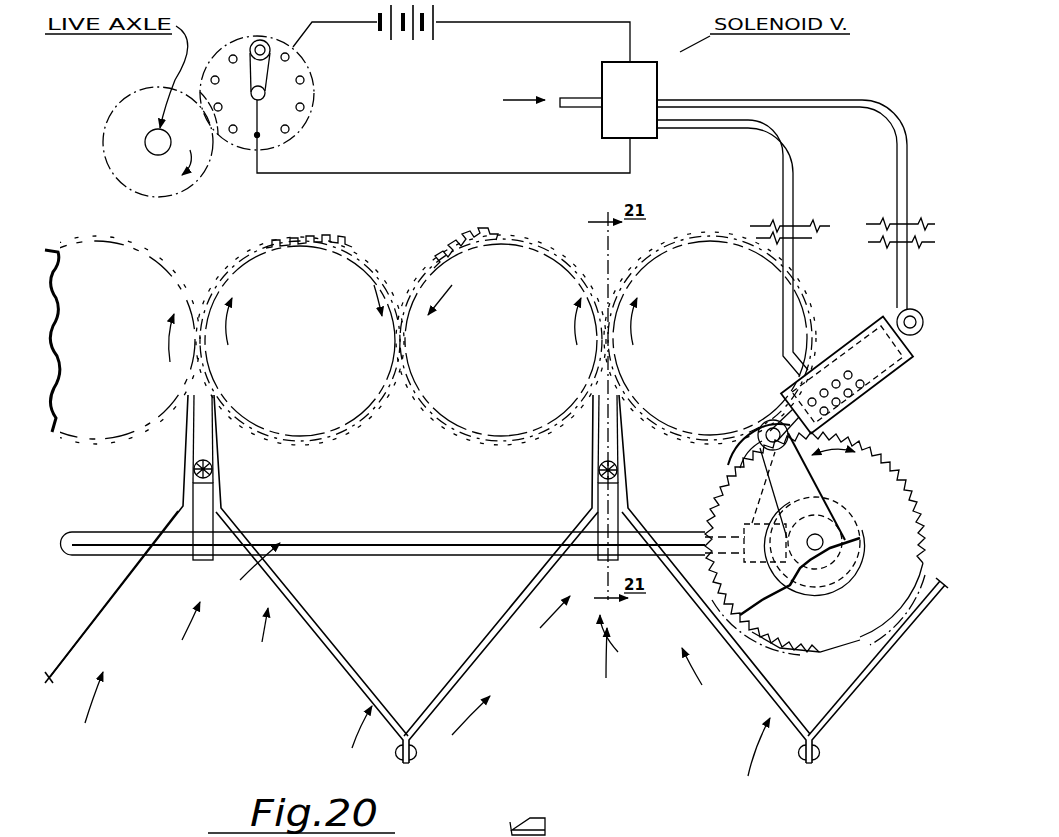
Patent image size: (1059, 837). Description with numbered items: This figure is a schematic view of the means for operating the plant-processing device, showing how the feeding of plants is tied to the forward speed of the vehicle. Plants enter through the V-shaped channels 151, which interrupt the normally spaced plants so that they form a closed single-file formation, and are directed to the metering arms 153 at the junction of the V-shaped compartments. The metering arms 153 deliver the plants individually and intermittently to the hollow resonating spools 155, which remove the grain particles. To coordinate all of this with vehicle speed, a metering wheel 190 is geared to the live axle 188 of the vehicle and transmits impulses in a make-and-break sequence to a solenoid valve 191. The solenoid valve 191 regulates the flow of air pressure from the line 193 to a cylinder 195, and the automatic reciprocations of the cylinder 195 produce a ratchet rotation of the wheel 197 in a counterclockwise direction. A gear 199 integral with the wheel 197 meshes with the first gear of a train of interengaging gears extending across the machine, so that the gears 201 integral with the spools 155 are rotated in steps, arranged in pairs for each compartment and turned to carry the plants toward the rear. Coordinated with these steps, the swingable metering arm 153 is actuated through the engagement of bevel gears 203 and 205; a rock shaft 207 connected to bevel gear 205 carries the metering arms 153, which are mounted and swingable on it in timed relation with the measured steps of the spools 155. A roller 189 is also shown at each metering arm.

The V-shaped channels 151 is at (104, 622).
The metering arms 153 is at (197, 501).
The hollow resonating spools 155 is at (246, 242).
The live axle 188 is at (146, 143).
The roller 189 is at (213, 469).
The metering wheel 190 is at (296, 104).
The solenoid valve 191 is at (660, 86).
The line 193 is at (573, 108).
The cylinder 195 is at (860, 320).
The wheel 197 is at (893, 476).
The gear 199 is at (818, 650).
The gears 201 is at (336, 236).
The bevel gear 203 is at (838, 575).
The bevel gear 205 is at (754, 507).
The rock shaft 207 is at (405, 531).